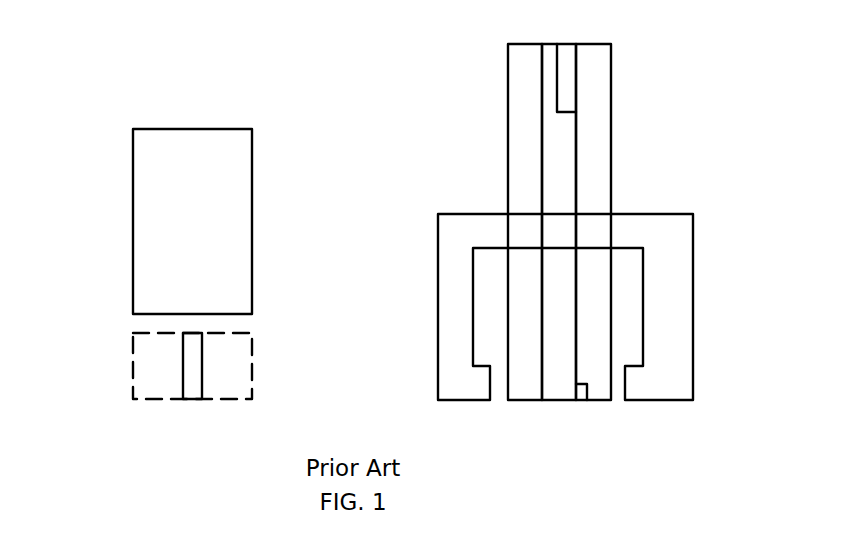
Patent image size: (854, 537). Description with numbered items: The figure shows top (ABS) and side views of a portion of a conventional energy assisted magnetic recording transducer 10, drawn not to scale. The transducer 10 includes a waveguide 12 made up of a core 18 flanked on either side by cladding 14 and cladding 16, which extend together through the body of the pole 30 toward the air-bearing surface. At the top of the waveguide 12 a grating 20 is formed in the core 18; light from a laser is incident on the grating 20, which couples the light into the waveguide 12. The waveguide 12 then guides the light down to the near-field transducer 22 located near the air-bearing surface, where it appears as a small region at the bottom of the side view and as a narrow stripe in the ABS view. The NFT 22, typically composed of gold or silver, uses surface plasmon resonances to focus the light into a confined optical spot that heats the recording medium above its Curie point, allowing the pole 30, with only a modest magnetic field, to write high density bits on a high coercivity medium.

The energy assisted magnetic recording (EAMR) transducer 10 is at (340, 40).
The waveguide 12 is at (584, 222).
The cladding 14 is at (611, 197).
The cladding 16 is at (508, 205).
The core 18 is at (577, 155).
The grating 20 is at (556, 77).
The near-field transducer (NFT) 22 is at (578, 400).
The pole 30 is at (252, 188).